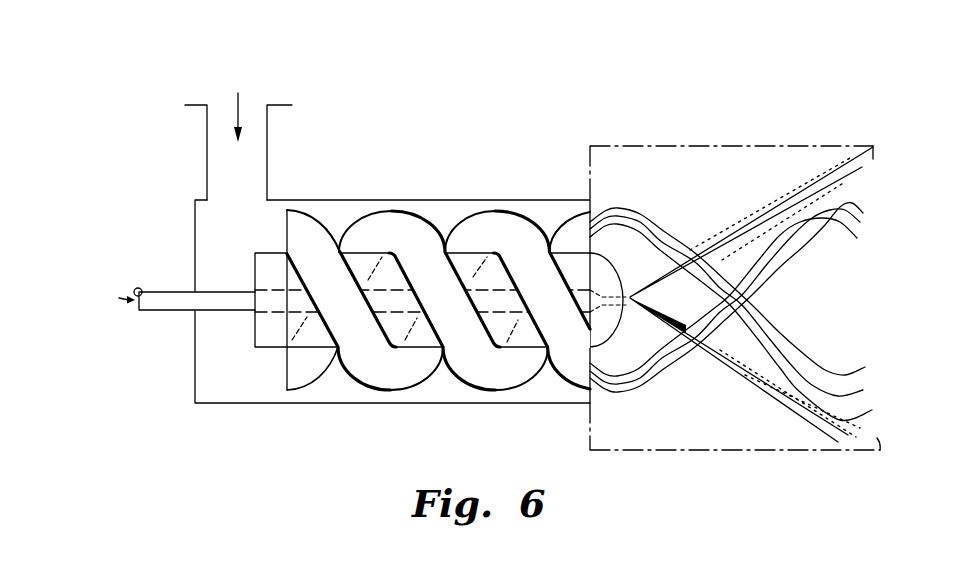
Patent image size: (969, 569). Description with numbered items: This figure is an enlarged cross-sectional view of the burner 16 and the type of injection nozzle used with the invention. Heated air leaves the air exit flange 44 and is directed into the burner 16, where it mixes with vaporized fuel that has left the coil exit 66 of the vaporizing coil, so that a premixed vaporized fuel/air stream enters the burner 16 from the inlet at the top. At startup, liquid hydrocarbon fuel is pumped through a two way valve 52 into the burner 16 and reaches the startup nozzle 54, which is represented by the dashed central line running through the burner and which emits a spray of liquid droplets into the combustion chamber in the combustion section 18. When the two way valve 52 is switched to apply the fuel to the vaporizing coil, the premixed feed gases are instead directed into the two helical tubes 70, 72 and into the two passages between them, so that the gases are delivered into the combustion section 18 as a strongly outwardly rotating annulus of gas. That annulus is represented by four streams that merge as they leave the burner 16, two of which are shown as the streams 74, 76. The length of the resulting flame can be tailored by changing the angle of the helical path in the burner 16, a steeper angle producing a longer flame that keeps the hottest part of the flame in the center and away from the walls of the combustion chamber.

The burner 16 is at (456, 151).
The combustion section 18 is at (787, 128).
The air exit flange 44 is at (255, 100).
The two way valve 52 is at (90, 308).
The startup nozzle 54 is at (244, 279).
The coil exit 66 is at (246, 93).
The helical tube 70 is at (327, 233).
The helical tube 72 is at (314, 379).
The stream 74 is at (646, 214).
The stream 76 is at (638, 383).